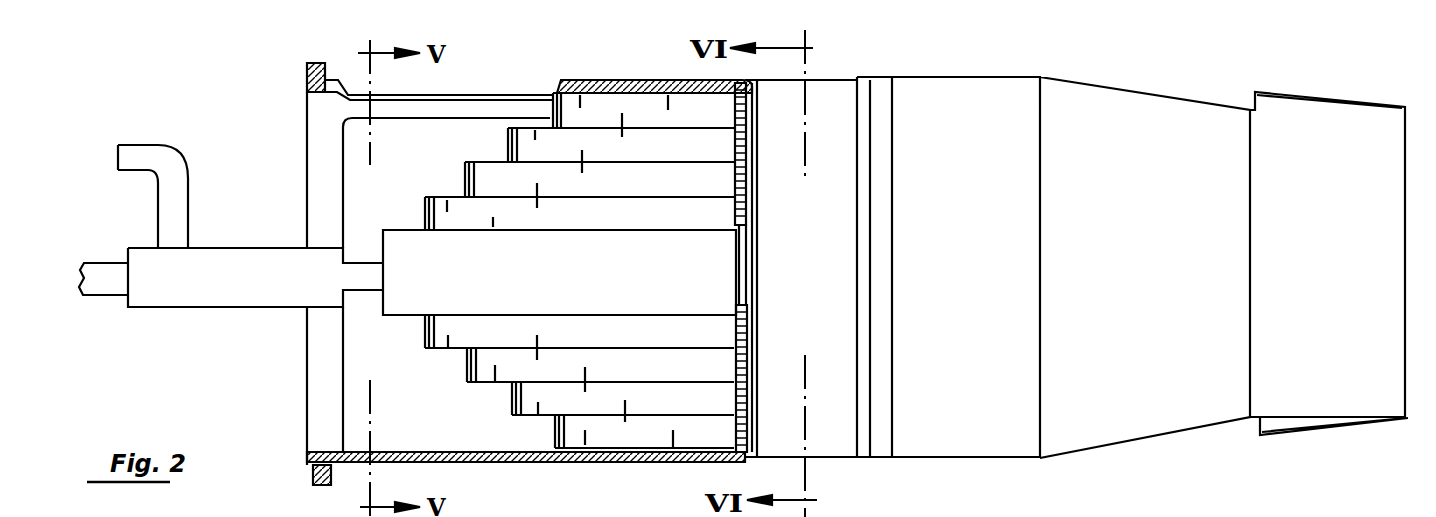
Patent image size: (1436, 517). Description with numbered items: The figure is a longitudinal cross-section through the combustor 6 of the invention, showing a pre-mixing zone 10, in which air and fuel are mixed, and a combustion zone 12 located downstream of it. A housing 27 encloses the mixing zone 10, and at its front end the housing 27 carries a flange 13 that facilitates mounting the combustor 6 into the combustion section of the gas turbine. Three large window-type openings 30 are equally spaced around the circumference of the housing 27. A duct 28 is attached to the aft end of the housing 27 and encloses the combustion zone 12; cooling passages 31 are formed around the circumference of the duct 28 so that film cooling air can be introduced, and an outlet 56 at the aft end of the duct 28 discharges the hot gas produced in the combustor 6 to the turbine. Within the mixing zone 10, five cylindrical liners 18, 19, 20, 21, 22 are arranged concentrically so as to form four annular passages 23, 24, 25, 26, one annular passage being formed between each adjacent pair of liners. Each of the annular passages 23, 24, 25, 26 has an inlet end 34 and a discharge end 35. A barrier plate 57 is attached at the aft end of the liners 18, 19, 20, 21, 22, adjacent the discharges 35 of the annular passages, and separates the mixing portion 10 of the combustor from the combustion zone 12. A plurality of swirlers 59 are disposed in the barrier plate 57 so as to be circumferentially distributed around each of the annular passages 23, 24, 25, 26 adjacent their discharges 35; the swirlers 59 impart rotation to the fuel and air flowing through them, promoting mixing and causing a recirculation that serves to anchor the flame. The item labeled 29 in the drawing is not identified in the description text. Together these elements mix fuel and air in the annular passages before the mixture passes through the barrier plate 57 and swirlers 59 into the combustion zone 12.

The combustor 6 is at (293, 68).
The pre-mixing zone 10 is at (590, 67).
The combustion zone 12 is at (827, 283).
The flange 13 is at (308, 72).
The cylindrical liner 18 is at (388, 230).
The cylindrical liner 19 is at (440, 197).
The cylindrical liner 20 is at (488, 162).
The cylindrical liner 21 is at (525, 127).
The cylindrical liner 22 is at (558, 93).
The annular passage 23 is at (580, 227).
The annular passage 24 is at (620, 190).
The annular passage 25 is at (672, 157).
The annular passage 26 is at (705, 123).
The housing 27 is at (558, 457).
The duct 28 is at (937, 462).
The outer sleeve 29 is at (455, 105).
The window-type openings 30 is at (400, 160).
The cooling passages 31 is at (863, 460).
The inlet end 34 is at (468, 370).
The discharge end 35 is at (723, 363).
The outlet 56 is at (1402, 122).
The barrier plate 57 is at (746, 158).
The swirlers 59 is at (746, 145).